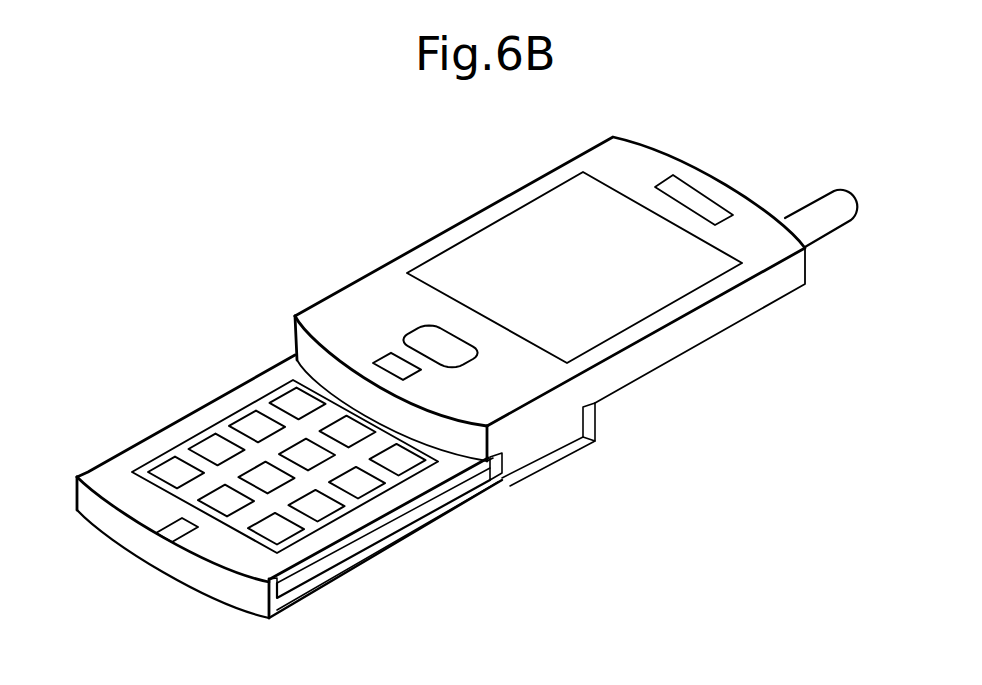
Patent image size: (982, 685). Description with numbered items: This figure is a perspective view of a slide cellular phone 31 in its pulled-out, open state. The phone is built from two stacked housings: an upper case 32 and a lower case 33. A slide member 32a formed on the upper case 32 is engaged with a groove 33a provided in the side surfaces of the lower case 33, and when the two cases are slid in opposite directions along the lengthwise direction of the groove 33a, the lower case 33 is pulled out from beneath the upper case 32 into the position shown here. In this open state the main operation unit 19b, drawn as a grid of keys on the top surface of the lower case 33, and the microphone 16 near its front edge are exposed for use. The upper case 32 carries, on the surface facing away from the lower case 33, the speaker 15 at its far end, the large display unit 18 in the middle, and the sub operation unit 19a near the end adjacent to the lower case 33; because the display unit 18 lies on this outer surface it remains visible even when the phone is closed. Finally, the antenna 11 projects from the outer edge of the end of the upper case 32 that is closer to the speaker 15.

The slide cellular phone 31 is at (293, 164).
The upper case 32 is at (717, 317).
The slide member 32a is at (553, 438).
The lower case 33 is at (193, 580).
The groove 33a is at (425, 510).
The antenna 11 is at (833, 202).
The speaker 15 is at (693, 198).
The microphone 16 is at (170, 533).
The display unit 18 is at (555, 272).
The sub operation unit 19a is at (422, 333).
The main operation unit 19b is at (255, 457).